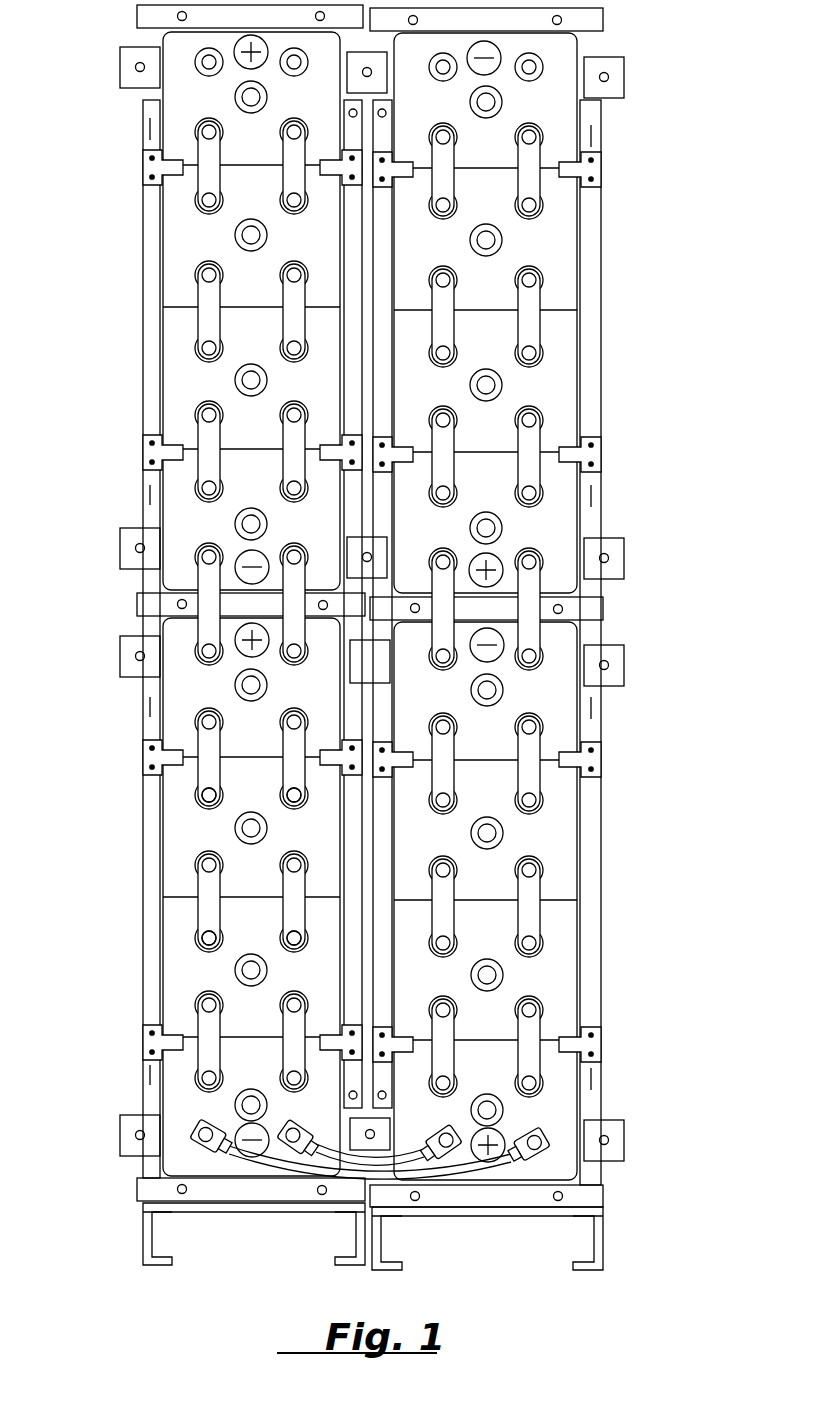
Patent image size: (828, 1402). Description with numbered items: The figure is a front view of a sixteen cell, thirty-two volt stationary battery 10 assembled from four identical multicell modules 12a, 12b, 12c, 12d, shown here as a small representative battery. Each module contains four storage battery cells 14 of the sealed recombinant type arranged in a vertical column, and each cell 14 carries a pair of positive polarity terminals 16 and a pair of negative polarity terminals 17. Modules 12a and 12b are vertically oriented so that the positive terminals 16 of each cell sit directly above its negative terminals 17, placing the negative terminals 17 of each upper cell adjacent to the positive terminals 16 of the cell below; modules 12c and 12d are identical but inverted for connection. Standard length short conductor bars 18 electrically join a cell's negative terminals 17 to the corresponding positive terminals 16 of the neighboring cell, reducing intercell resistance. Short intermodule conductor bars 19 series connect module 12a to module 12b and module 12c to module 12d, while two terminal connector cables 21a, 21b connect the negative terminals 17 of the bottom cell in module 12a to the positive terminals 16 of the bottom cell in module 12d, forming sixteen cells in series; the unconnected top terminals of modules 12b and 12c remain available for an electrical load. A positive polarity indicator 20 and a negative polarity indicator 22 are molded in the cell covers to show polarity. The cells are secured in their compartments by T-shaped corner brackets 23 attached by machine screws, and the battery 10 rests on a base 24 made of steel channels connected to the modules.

The stationary battery 10 is at (658, 90).
The module 12a is at (143, 878).
The module 12b is at (143, 308).
The module 12c is at (600, 312).
The module 12d is at (600, 906).
The storage battery cell 14 is at (195, 694).
The positive polarity terminal 16 is at (283, 933).
The negative polarity terminal 17 is at (283, 1003).
The short conductor bar 18 is at (292, 884).
The intermodule conductor bar 19 is at (524, 606).
The positive polarity indicator 20 is at (240, 64).
The terminal connector cable 21a is at (284, 1165).
The terminal connector cable 21b is at (460, 1165).
The negative polarity indicator 22 is at (262, 1140).
The T-shaped corner bracket 23 is at (150, 1030).
The base 24 is at (600, 1243).